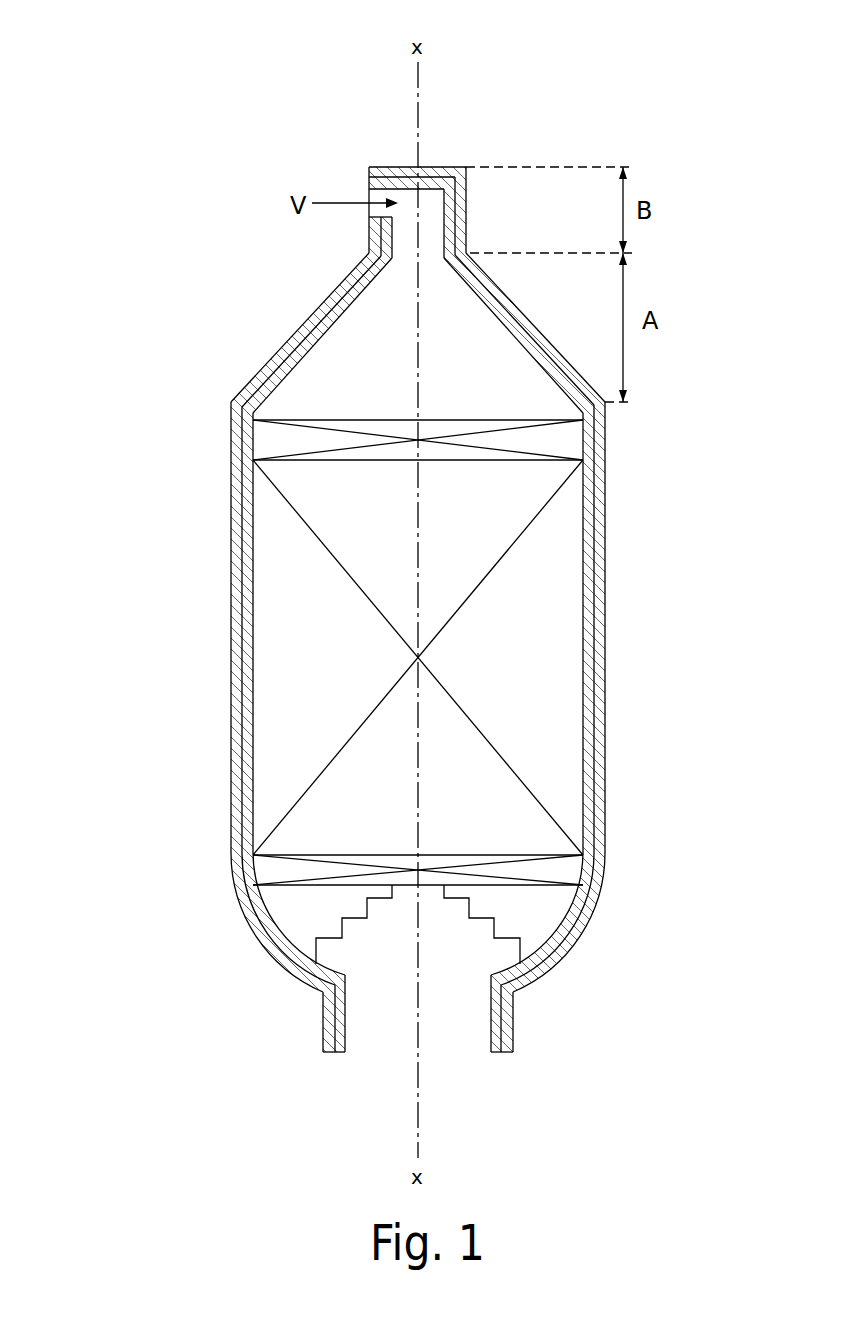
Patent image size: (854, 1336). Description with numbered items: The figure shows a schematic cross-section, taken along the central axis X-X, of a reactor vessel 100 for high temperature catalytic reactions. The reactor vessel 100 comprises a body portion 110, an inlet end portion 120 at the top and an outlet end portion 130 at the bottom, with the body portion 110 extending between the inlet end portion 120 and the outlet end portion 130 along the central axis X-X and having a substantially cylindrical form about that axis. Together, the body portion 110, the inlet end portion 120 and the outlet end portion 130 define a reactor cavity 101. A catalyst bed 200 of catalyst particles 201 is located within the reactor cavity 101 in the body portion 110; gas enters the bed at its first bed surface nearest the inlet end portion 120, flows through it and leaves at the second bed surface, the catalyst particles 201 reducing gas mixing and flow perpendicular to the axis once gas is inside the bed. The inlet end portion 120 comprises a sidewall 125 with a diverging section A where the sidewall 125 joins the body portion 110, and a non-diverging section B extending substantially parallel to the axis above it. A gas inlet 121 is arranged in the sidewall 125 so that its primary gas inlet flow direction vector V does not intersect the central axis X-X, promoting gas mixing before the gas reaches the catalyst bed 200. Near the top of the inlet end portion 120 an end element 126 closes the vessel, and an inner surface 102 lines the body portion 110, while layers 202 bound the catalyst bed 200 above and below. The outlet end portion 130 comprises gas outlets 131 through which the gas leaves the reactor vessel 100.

The reactor vessel 100 is at (624, 61).
The reactor cavity 101 is at (487, 517).
The inner wall surface 102 is at (252, 702).
The body portion 110 is at (680, 402).
The inlet end portion 120 is at (680, 167).
The gas inlet 121 is at (370, 207).
The sidewall 125 is at (267, 355).
The end boss 126 is at (432, 166).
The outlet end portion 130 is at (680, 882).
The gas outlet 131 is at (453, 1037).
The catalyst bed 200 is at (265, 632).
The catalyst particles 201 is at (352, 629).
The reinforcement layer 202 is at (265, 435).